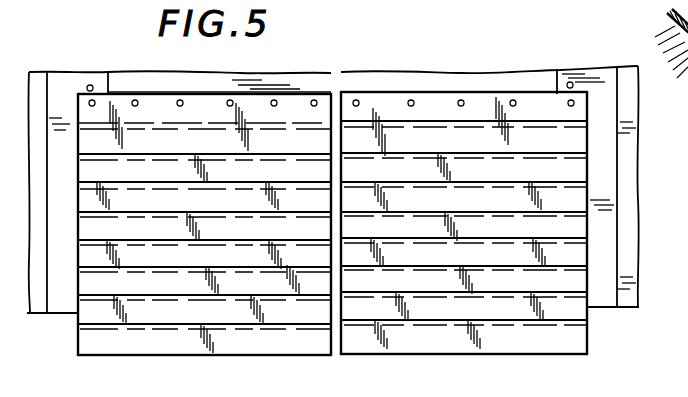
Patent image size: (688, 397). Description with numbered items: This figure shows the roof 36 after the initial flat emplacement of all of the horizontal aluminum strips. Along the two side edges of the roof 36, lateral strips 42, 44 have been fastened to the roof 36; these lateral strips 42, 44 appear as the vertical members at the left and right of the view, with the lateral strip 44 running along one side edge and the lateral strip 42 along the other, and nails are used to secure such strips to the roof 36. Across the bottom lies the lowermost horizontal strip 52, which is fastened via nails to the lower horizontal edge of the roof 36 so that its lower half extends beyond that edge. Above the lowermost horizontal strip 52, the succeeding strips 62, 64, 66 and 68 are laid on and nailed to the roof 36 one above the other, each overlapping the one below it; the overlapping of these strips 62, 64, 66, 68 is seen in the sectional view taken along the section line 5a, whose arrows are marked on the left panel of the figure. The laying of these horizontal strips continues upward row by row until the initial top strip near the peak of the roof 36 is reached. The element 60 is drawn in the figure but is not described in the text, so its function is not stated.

The roof 36 is at (38, 79).
The lateral strip 42 is at (63, 305).
The lateral strip 44 is at (608, 80).
The lowermost horizontal strip 52 is at (521, 343).
The slat 60 is at (438, 320).
The succeeding strip 62 is at (571, 277).
The succeeding strip 64 is at (580, 251).
The succeeding strip 66 is at (580, 223).
The succeeding strip 68 is at (579, 195).
The section line 5a is at (265, 183).